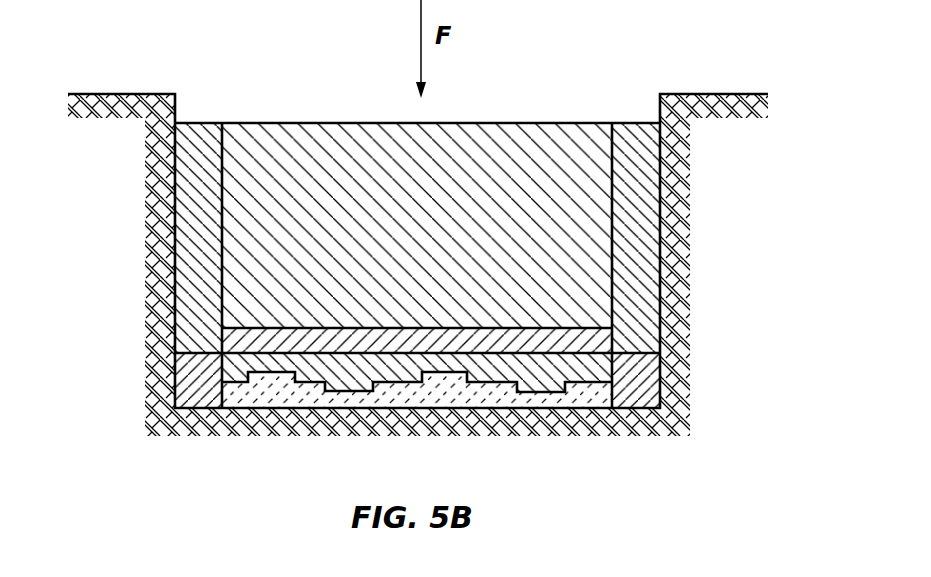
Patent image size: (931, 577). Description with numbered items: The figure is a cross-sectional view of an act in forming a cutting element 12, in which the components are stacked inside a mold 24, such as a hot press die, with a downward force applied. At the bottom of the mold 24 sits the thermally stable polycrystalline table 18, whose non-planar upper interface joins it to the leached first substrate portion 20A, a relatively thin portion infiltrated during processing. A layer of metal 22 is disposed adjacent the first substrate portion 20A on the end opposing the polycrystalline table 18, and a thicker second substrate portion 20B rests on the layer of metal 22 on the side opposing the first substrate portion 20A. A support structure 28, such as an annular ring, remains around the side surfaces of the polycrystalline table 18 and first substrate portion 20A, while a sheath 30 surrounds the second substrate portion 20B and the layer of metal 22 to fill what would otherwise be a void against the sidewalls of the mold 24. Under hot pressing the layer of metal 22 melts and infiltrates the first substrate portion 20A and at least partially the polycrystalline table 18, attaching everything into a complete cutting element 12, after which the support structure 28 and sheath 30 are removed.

The cutting element 12 is at (527, 267).
The polycrystalline table 18 is at (604, 393).
The first substrate portion 20A is at (604, 367).
The second substrate portion 20B is at (582, 283).
The layer of metal 22 is at (604, 339).
The mold 24 is at (150, 263).
The support structure 28 is at (195, 383).
The sheath 30 is at (197, 202).